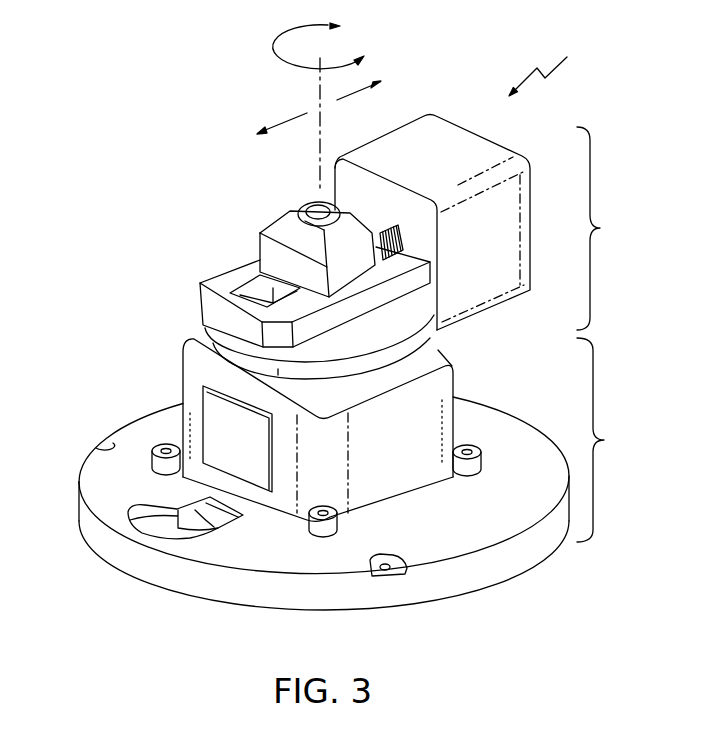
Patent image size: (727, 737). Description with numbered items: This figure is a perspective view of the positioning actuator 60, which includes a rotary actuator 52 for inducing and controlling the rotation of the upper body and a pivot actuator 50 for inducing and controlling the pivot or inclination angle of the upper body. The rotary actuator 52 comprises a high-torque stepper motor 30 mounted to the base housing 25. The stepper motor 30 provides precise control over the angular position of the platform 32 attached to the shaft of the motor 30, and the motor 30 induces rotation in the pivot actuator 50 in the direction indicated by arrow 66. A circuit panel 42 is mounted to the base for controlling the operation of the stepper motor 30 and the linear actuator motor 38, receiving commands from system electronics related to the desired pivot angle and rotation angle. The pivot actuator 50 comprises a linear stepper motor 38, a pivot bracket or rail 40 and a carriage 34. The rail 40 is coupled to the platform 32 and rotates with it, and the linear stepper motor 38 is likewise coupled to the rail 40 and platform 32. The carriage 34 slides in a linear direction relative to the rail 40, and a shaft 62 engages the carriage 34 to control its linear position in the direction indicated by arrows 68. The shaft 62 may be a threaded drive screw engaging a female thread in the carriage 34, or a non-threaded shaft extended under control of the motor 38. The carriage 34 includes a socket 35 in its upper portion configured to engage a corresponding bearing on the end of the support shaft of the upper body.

The base housing 25 is at (135, 425).
The stepper motor 30 is at (398, 487).
The platform 32 is at (393, 330).
The carriage 34 is at (260, 247).
The socket 35 is at (312, 210).
The linear stepper motor 38 is at (513, 229).
The rail 40 is at (200, 296).
The circuit panel 42 is at (252, 452).
The pivot actuator 50 is at (610, 228).
The rotary actuator 52 is at (610, 440).
The positioning actuator 60 is at (551, 61).
The shaft 62 is at (386, 230).
The arrow 66 is at (366, 36).
The arrows 68 is at (345, 97).